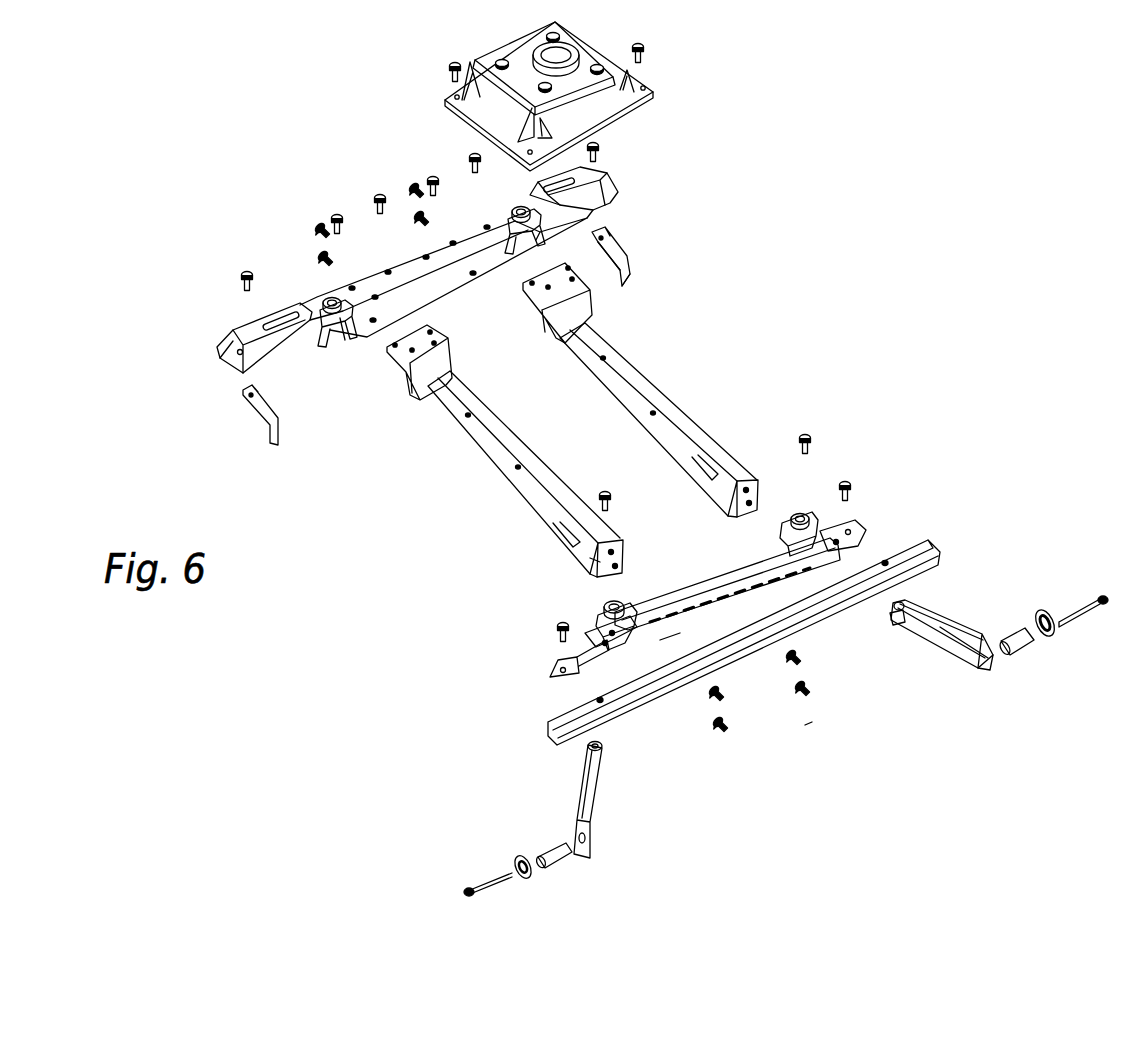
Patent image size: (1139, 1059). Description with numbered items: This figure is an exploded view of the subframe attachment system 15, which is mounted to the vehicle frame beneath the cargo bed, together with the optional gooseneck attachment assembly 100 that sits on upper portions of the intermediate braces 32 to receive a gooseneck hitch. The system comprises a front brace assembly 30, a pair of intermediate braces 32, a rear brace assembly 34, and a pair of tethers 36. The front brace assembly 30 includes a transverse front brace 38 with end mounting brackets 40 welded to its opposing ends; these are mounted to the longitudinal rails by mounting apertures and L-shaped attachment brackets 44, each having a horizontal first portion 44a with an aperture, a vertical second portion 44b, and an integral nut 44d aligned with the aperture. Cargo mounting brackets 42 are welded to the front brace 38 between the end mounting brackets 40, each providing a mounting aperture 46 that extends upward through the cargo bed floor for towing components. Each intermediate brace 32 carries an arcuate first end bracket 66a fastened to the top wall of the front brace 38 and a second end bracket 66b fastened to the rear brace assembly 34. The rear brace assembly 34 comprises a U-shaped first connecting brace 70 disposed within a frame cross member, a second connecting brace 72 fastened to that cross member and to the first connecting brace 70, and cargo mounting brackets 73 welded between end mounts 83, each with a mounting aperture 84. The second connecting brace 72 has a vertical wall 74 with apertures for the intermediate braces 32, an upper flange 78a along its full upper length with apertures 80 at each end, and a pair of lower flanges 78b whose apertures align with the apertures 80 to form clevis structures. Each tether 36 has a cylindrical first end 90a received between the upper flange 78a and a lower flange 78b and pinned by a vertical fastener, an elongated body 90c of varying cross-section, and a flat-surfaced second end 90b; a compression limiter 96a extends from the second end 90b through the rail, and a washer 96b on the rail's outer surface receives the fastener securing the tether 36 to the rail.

The subframe attachment system 15 is at (233, 157).
The gooseneck attachment assembly 100 is at (446, 51).
The front brace assembly 30 is at (331, 286).
The front brace 38 is at (415, 265).
The end mounting brackets 40 is at (268, 325).
The L-shaped attachment brackets 44 is at (243, 418).
The first portion 44a is at (618, 248).
The second portion 44b is at (633, 272).
The nut 44d is at (592, 260).
The mounting aperture 46 is at (338, 337).
The cargo mounting brackets 42 is at (353, 333).
The first end bracket 66a is at (552, 316).
The second end bracket 66b is at (608, 530).
The intermediate braces 32 is at (652, 385).
The mounting aperture 84 is at (602, 591).
The vertical wall 74 is at (725, 600).
The second connecting brace 72 is at (673, 630).
The first connecting brace 70 is at (563, 742).
The cargo mounting brackets 73 is at (596, 620).
The apertures 80 is at (557, 666).
The end mounts 83 is at (608, 642).
The upper flange 78a is at (757, 540).
The lower flanges 78b is at (790, 578).
The rear brace assembly 34 is at (806, 728).
The first end 90a is at (893, 622).
The second end 90b is at (988, 665).
The elongated body 90c is at (952, 648).
The compression limiter 96a is at (1018, 645).
The washer 96b is at (1058, 628).
The tethers 36 is at (617, 797).